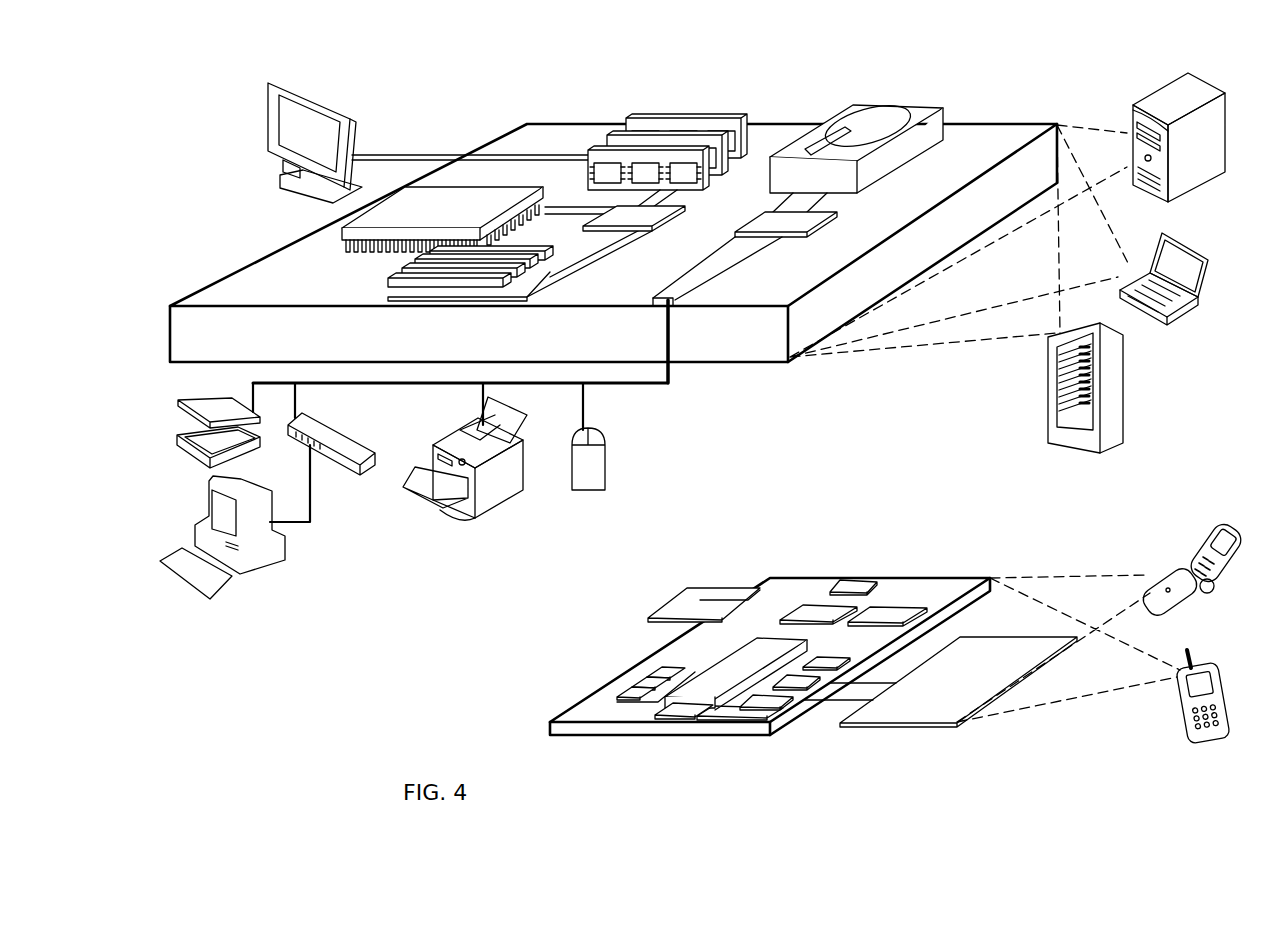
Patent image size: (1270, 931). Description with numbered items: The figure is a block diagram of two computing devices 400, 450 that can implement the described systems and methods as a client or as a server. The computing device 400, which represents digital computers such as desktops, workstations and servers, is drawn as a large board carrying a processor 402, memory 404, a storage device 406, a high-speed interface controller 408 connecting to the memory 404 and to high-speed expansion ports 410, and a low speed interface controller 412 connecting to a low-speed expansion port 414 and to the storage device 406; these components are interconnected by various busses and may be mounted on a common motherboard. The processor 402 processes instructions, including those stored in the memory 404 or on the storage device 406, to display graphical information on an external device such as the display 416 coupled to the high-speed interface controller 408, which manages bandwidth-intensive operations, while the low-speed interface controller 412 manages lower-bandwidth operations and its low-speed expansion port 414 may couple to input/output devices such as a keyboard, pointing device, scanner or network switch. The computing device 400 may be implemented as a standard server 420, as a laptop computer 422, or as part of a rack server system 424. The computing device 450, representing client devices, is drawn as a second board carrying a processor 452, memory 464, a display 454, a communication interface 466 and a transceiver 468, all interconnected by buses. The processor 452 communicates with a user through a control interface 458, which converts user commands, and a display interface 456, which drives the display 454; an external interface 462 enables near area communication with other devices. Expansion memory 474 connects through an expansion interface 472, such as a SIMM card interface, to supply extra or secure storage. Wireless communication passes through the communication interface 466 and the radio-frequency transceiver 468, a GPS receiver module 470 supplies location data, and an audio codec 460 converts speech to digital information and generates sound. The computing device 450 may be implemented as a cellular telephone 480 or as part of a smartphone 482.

The computing device 400 is at (456, 96).
The processor 402 is at (327, 237).
The memory 404 is at (637, 117).
The storage device 406 is at (847, 105).
The high-speed interface controller 408 is at (612, 217).
The high-speed expansion ports 410 is at (403, 277).
The low-speed interface controller 412 is at (787, 224).
The low-speed expansion port 414 is at (668, 304).
The display 416 is at (268, 84).
The standard server 420 is at (1131, 110).
The laptop computer 422 is at (1159, 233).
The rack server system 424 is at (1048, 410).
The computing device 450 is at (751, 556).
The processor 452 is at (693, 720).
The display 454 is at (957, 724).
The display interface 456 is at (778, 710).
The control interface 458 is at (806, 687).
The audio codec 460 is at (823, 668).
The external interface 462 is at (680, 723).
The memory 464 is at (632, 690).
The communication interface 466 is at (817, 610).
The transceiver 468 is at (888, 612).
The GPS receiver module 470 is at (852, 585).
The expansion interface 472 is at (750, 588).
The expansion memory 474 is at (687, 590).
The cellular telephone 480 is at (1205, 521).
The smartphone 482 is at (1187, 650).